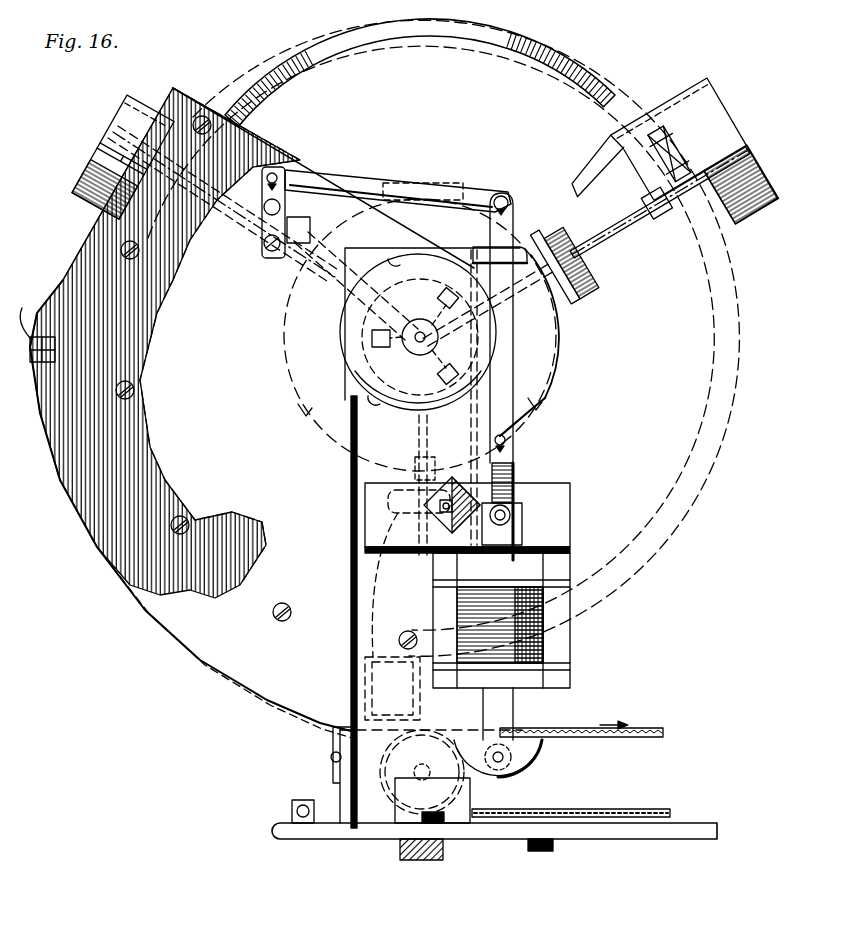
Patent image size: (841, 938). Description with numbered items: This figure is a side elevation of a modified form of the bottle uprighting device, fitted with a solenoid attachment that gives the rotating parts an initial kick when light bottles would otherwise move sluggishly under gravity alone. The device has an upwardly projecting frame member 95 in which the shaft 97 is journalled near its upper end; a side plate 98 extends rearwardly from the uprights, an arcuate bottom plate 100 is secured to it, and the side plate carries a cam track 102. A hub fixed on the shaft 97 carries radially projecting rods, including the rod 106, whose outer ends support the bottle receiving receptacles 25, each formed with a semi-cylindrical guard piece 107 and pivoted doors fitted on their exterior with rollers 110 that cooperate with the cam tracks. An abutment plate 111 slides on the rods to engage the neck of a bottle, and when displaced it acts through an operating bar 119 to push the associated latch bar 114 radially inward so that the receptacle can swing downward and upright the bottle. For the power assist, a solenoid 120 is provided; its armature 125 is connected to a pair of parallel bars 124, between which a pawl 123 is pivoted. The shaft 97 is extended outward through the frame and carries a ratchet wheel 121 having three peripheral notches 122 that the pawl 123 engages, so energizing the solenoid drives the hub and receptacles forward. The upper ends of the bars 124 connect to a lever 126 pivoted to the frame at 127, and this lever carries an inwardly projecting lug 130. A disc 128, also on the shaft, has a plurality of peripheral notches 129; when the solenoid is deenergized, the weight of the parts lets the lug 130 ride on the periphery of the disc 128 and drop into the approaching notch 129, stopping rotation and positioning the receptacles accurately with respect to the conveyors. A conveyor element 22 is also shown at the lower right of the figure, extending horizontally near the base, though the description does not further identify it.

The cam track 102 is at (412, 30).
The bottle receiving receptacle 25 is at (98, 173).
The side plate 98 is at (80, 272).
The arcuate bottom plate 100 is at (46, 440).
The pivot 127 is at (278, 168).
The lug 130 is at (428, 186).
The lever 126 is at (500, 190).
The peripheral notch 122 is at (398, 258).
The ratchet wheel 121 is at (442, 260).
The abutment plate 111 is at (270, 268).
The operating bar 119 is at (348, 302).
The shaft 97 is at (434, 322).
The latch bar 114 is at (370, 342).
The peripheral notch 129 is at (310, 418).
The disc 128 is at (560, 332).
The pawl 123 is at (516, 437).
The parallel bar 124 is at (506, 486).
The armature 125 is at (522, 530).
The frame member 95 is at (350, 558).
The solenoid 120 is at (556, 608).
The strip 22 is at (650, 728).
The semi-cylindrical guard piece 107 is at (744, 162).
The roller 110 is at (658, 170).
The radial rod 106 is at (616, 226).